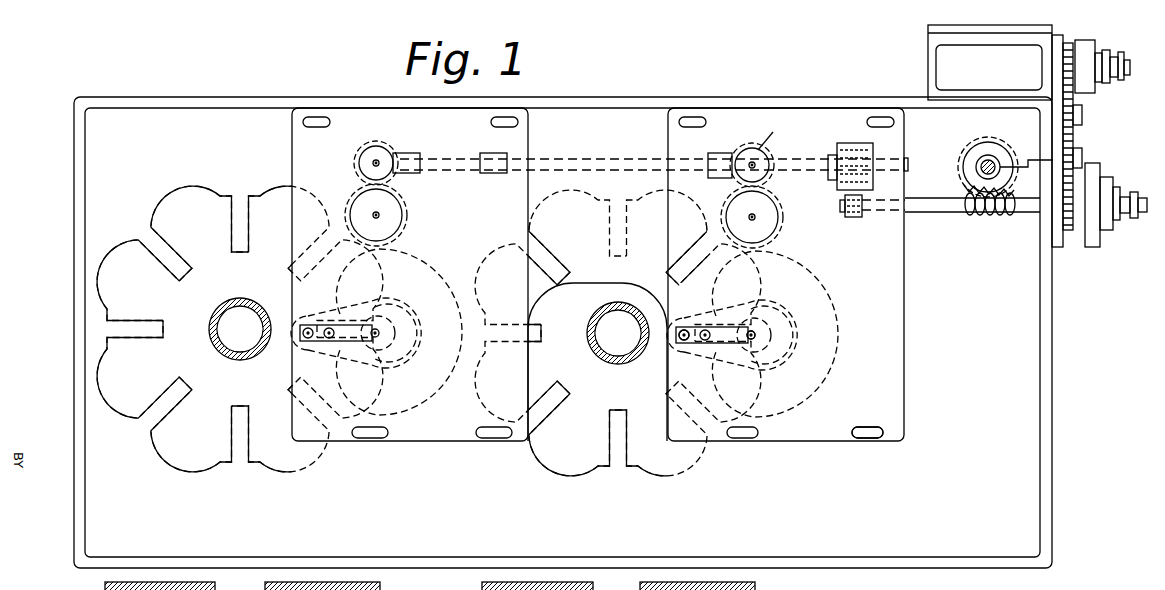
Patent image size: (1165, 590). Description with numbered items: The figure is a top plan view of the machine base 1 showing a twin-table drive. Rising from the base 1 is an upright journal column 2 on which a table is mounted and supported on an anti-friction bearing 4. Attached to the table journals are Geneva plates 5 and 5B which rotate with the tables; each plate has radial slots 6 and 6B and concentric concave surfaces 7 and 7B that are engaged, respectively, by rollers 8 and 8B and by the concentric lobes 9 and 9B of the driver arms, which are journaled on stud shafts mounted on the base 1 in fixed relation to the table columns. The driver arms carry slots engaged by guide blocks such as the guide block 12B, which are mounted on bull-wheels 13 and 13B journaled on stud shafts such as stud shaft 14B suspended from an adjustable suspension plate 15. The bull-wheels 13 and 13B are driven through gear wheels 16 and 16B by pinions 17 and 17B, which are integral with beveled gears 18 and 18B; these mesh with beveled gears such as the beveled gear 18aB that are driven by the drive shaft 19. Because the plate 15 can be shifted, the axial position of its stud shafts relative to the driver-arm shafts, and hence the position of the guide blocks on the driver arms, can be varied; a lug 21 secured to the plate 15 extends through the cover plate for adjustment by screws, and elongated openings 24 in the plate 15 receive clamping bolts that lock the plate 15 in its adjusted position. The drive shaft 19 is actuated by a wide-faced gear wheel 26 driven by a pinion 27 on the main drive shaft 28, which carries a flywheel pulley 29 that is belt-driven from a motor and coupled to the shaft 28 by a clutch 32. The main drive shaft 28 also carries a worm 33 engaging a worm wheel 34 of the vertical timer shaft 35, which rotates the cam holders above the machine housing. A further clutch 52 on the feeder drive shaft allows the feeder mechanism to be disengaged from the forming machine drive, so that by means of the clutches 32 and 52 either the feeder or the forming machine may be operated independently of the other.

The base 1 is at (1054, 448).
The upright journal column 2 is at (37, 325).
The anti-friction bearing 4 is at (37, 165).
The Geneva plate 5 is at (245, 392).
The Geneva plate 5B is at (640, 397).
The radial slot 6 is at (148, 412).
The radial slot 6B is at (625, 455).
The concentric concave surface 7 is at (198, 433).
The concentric concave surface 7B is at (580, 437).
The roller 8 is at (341, 323).
The roller 8B is at (716, 327).
The concentric lobe 9 is at (425, 332).
The concentric lobe 9B is at (793, 311).
The guide block 12B is at (692, 323).
The bull-wheel 13 is at (441, 274).
The bull-wheel 13B is at (831, 298).
The stud shaft 14B is at (780, 333).
The adjustable suspension plate 15 is at (297, 173).
The gear wheel 16 is at (408, 211).
The gear wheel 16B is at (785, 213).
The pinion 17 is at (396, 157).
The pinion 17B is at (780, 135).
The beveled gear 18 is at (358, 146).
The beveled gear 18B is at (750, 143).
The beveled gear 18aB is at (720, 156).
The drive shaft 19 is at (628, 161).
The lug 21 is at (502, 156).
The elongated opening 24 is at (858, 438).
The gear wheel 26 is at (842, 143).
The pinion 27 is at (853, 220).
The main drive shaft 28 is at (940, 213).
The flywheel pulley 29 is at (1091, 248).
The clutch 32 is at (1114, 229).
The worm 33 is at (987, 216).
The worm wheel 34 is at (998, 147).
The timer shaft 35 is at (978, 172).
The clutch 52 is at (1103, 56).